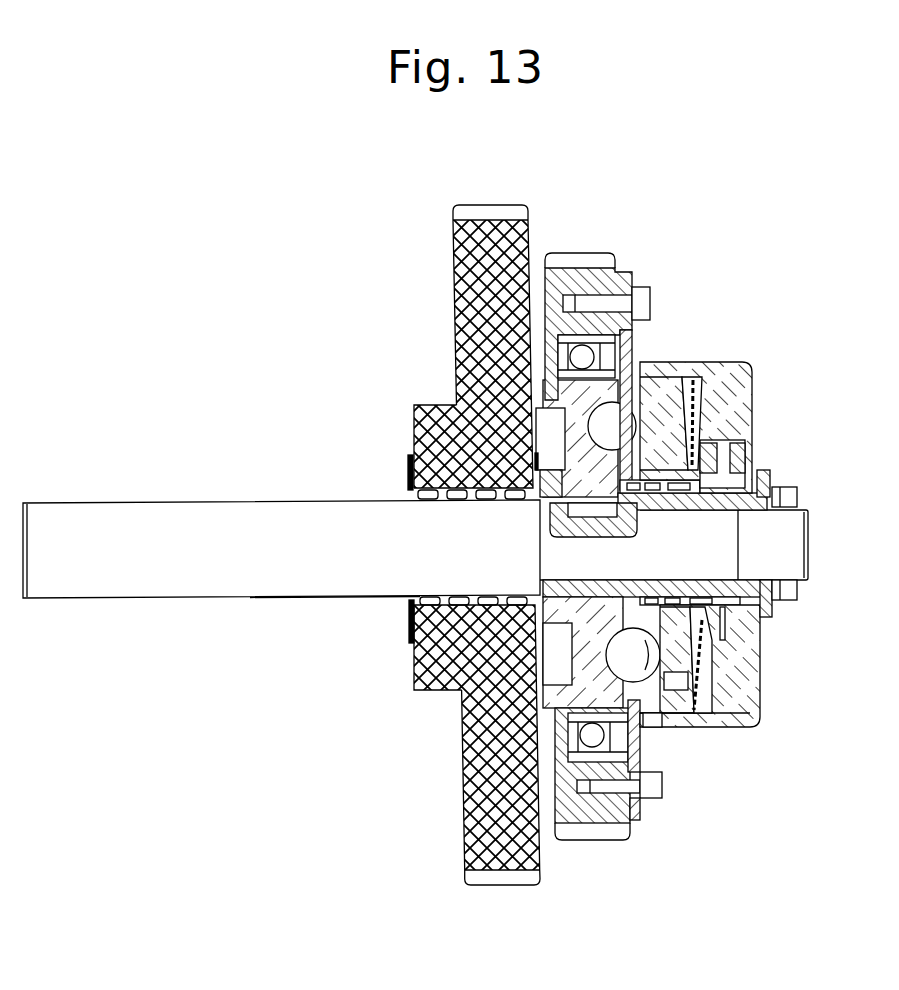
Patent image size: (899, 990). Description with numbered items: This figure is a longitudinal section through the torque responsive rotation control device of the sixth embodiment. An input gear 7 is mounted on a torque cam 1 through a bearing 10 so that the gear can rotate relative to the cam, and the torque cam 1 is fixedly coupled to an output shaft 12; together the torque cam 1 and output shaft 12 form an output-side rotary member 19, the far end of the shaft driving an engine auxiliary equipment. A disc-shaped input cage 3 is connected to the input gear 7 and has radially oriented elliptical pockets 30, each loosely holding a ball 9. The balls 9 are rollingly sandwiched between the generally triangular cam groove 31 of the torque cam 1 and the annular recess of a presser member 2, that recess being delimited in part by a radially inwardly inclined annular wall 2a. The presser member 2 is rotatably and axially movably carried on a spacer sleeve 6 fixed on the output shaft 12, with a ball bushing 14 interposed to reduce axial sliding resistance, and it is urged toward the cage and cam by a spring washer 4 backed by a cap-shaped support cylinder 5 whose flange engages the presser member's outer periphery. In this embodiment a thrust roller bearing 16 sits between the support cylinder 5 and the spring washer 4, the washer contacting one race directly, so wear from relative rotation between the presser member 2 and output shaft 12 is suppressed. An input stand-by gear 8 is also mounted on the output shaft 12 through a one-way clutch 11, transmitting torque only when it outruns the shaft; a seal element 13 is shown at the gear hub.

The torque cam 1 is at (633, 657).
The presser member 2 is at (690, 732).
The radially inwardly inclined annular wall 2a is at (740, 385).
The input cage 3 is at (692, 362).
The spring washer 4 is at (750, 720).
The support cylinder 5 is at (755, 388).
The spacer sleeve 6 is at (750, 613).
The input gear 7 is at (580, 268).
The input stand-by gear 8 is at (463, 323).
The balls 9 is at (653, 727).
The bearing 10 is at (633, 360).
The one-way clutch 11 is at (415, 683).
The output shaft 12 is at (277, 530).
The seal 13 is at (405, 473).
The ball bushing 14 is at (755, 415).
The roller bearing 16 is at (750, 637).
The output-side rotary member 19 is at (301, 612).
The pockets 30 is at (678, 690).
The cam groove 31 is at (703, 393).